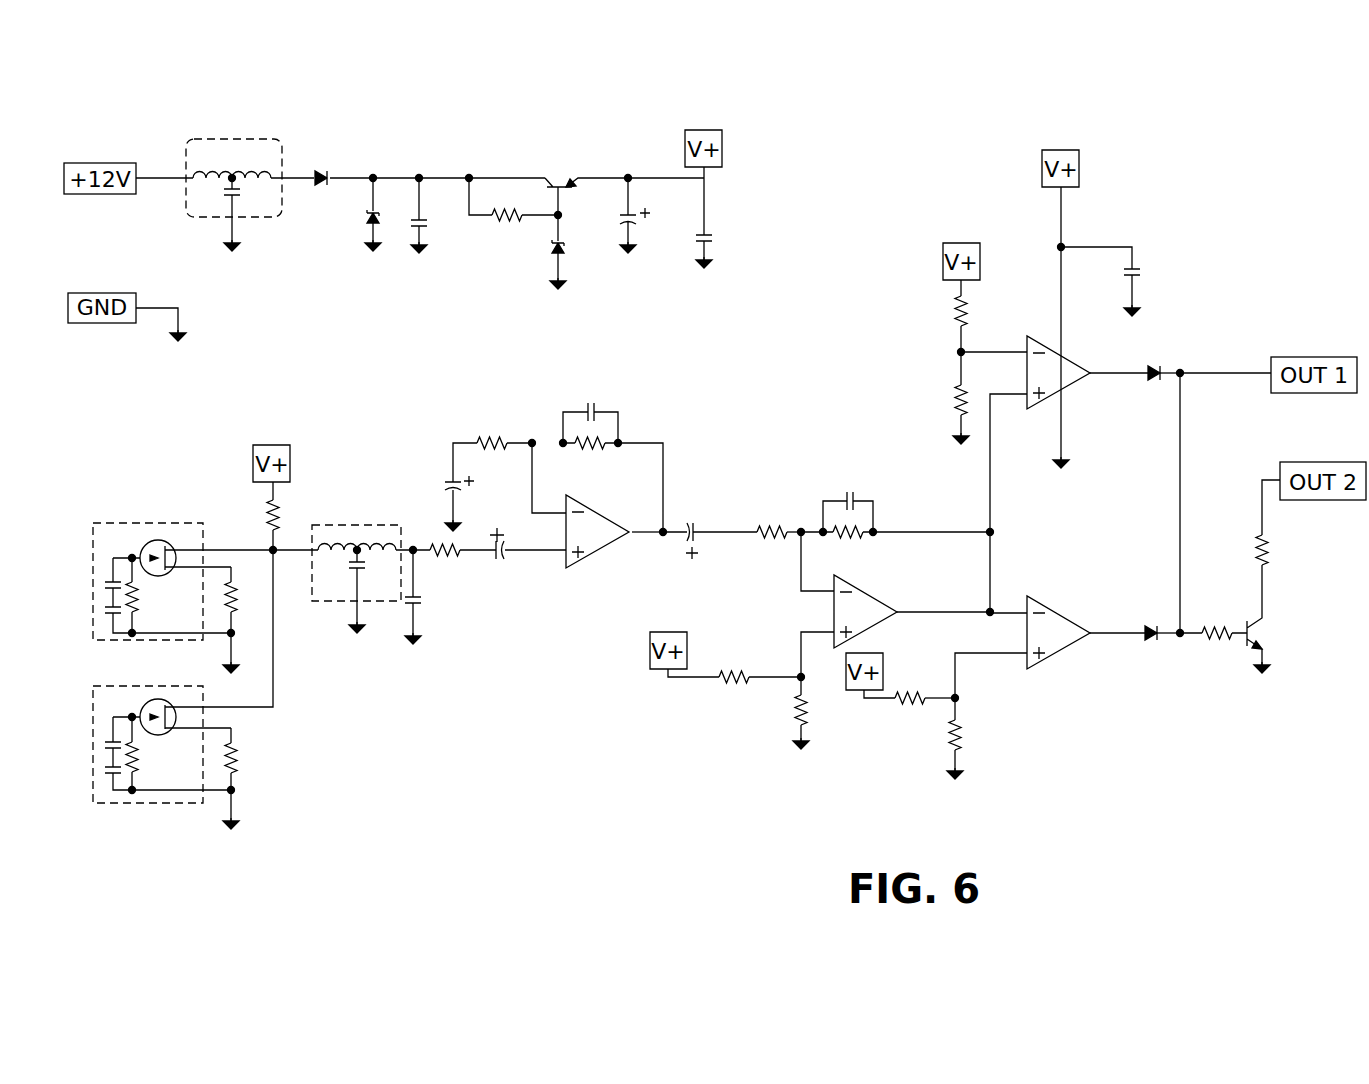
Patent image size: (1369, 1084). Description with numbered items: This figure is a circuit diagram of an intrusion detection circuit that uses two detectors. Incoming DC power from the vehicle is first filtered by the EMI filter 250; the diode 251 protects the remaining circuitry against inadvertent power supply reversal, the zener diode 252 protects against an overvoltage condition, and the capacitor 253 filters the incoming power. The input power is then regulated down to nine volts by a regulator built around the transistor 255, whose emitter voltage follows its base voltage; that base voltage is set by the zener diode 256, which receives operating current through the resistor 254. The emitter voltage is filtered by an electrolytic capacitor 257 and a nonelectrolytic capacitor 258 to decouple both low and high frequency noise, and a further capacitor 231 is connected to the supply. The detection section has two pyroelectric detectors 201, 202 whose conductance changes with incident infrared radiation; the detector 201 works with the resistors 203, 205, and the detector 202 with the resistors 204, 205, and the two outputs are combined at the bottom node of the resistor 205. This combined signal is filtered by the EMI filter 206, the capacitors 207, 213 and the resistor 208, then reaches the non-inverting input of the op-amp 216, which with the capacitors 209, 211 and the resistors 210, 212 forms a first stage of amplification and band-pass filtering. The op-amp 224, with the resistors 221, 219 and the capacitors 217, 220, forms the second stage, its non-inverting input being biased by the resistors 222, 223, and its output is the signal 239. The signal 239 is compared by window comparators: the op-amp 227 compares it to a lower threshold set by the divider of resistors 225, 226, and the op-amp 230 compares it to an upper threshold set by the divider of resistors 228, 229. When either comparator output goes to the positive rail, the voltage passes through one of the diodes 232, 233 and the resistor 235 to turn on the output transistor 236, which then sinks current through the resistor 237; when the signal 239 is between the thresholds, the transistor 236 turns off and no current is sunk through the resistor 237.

The pyroelectric detector 201 is at (152, 523).
The pyroelectric detector 202 is at (152, 803).
The resistor 203 is at (242, 606).
The resistor 204 is at (240, 757).
The resistor 205 is at (262, 520).
The EMI filter 206 is at (314, 525).
The capacitor 207 is at (422, 600).
The resistor 208 is at (439, 544).
The capacitor 209 is at (446, 478).
The resistor 210 is at (486, 443).
The capacitor 211 is at (588, 402).
The resistor 212 is at (600, 439).
The capacitor 213 is at (500, 562).
The operational amplifier 216 is at (610, 546).
The capacitor 217 is at (692, 521).
The resistor 219 is at (770, 520).
The capacitor 220 is at (842, 494).
The resistor 221 is at (866, 524).
The resistor 222 is at (734, 690).
The resistor 223 is at (788, 717).
The operational amplifier 224 is at (875, 622).
The resistor 225 is at (912, 710).
The resistor 226 is at (966, 734).
The op-amp comparator 227 is at (1058, 642).
The resistor 228 is at (949, 305).
The resistor 229 is at (948, 397).
The op-amp comparator 230 is at (1040, 345).
The capacitor 231 is at (1142, 249).
The diode 232 is at (1166, 365).
The diode 233 is at (1142, 627).
The resistor 235 is at (1220, 648).
The output transistor 236 is at (1266, 634).
The resistor 237 is at (1272, 545).
The signal 239 is at (925, 610).
The EMI filter 250 is at (234, 183).
The diode 251 is at (324, 172).
The zener diode 252 is at (366, 216).
The capacitor 253 is at (412, 230).
The resistor 254 is at (510, 192).
The transistor 255 is at (566, 183).
The zener diode 256 is at (553, 252).
The electrolytic capacitor 257 is at (642, 213).
The nonelectrolytic capacitor 258 is at (712, 240).